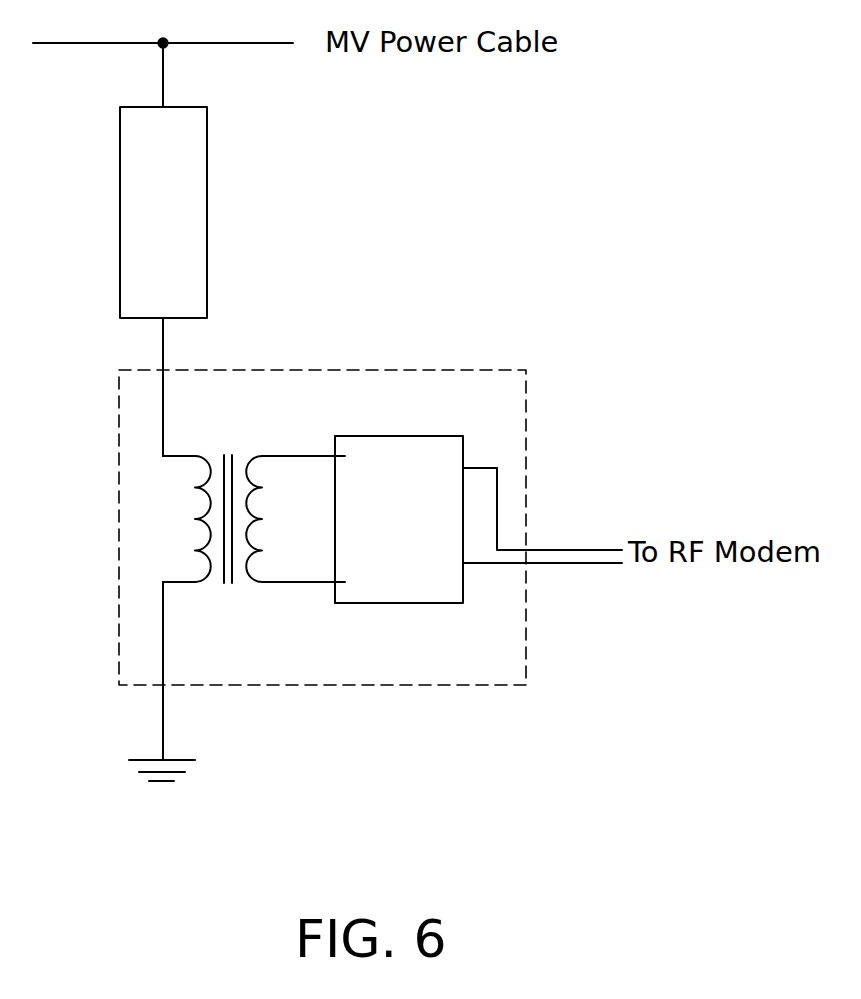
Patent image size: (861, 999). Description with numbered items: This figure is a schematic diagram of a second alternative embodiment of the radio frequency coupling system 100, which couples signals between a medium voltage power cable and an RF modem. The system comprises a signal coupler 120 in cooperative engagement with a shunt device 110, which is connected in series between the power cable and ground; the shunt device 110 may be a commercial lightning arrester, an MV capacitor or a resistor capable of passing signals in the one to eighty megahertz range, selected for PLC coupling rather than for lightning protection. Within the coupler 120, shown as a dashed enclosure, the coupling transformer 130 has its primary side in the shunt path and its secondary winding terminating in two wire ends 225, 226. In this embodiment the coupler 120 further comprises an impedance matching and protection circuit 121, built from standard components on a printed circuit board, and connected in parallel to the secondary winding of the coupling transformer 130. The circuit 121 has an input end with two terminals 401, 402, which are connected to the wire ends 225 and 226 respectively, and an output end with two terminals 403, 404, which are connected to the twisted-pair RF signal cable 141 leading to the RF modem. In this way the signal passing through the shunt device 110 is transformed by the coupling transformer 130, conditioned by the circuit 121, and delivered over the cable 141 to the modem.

The radio frequency coupling system 100 is at (441, 278).
The shunt device 110 is at (183, 190).
The signal coupler 120 is at (497, 378).
The impedance matching and protection circuit 121 is at (400, 457).
The coupling transformer 130 is at (238, 593).
The twisted-pair RF signal cable 141 is at (545, 563).
The wire end of the secondary winding 225 is at (298, 438).
The wire end of the secondary winding 226 is at (298, 601).
The input terminal 401 is at (365, 461).
The input terminal 402 is at (365, 583).
The output terminal 403 is at (469, 503).
The output terminal 404 is at (469, 564).